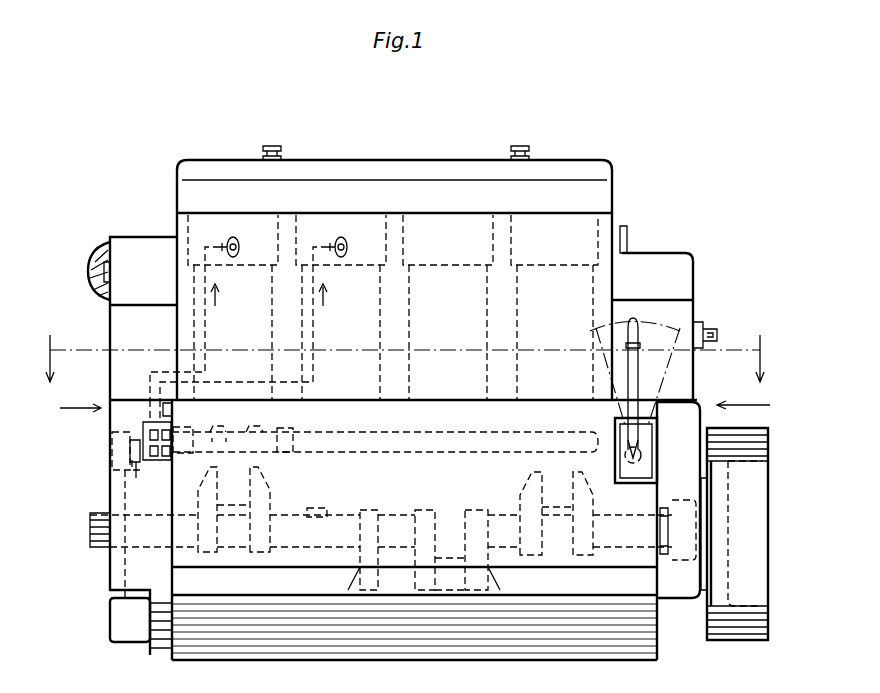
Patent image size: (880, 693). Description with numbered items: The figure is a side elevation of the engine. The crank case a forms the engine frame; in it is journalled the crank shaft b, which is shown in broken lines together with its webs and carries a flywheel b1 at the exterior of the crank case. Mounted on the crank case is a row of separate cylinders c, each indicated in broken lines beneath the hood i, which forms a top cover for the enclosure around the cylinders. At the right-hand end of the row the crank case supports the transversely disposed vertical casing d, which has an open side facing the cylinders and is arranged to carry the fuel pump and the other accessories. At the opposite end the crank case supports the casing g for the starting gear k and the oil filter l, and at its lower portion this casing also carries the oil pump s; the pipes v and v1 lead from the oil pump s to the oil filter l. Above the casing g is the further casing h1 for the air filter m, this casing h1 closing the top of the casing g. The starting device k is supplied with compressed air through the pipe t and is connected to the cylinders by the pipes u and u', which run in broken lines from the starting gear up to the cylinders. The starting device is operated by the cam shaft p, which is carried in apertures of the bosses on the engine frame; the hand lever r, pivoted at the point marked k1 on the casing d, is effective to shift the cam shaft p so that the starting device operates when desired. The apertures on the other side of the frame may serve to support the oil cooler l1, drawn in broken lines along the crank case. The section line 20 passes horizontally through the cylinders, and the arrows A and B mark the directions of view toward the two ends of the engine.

The hood i is at (357, 195).
The vertical casing d is at (690, 385).
The casing for the air filter h1 is at (130, 350).
The air filter m is at (100, 256).
The cylinders c is at (393, 307).
The pipe u is at (195, 318).
The pipe u' is at (259, 318).
The starting gear k is at (148, 425).
The pipe t is at (173, 409).
The oil filter l is at (122, 453).
The casing g is at (112, 492).
The pipe v is at (86, 549).
The pipe v1 is at (128, 578).
The oil pump s is at (120, 616).
The crank case a is at (414, 530).
The oil cooler l1 is at (406, 443).
The cam shaft p is at (238, 436).
The crank shaft b is at (503, 530).
The hand lever r is at (637, 378).
The lever pivot box k1 is at (652, 466).
The flywheel b1 is at (762, 502).
The section line 20 is at (411, 358).
The view direction A is at (78, 396).
The view direction B is at (756, 405).